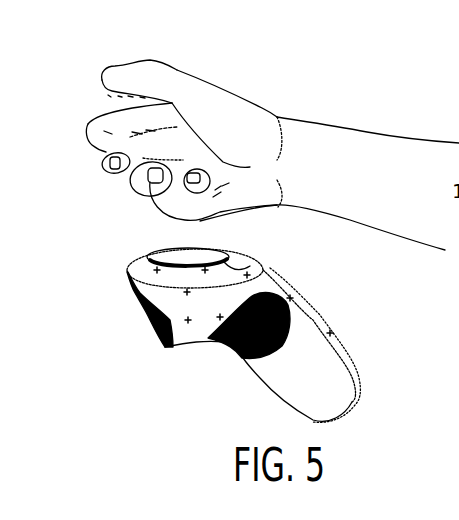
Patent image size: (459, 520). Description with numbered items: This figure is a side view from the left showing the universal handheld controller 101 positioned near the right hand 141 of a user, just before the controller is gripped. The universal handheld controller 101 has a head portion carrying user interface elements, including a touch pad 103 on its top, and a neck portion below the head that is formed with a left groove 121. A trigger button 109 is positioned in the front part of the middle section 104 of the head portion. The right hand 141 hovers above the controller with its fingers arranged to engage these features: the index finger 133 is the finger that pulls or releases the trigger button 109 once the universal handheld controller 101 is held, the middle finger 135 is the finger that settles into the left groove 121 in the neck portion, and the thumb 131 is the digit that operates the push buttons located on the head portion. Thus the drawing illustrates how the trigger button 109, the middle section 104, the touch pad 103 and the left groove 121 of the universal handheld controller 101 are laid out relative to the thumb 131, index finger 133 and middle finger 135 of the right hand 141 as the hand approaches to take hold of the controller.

The universal handheld controller 101 is at (234, 324).
The touch pad 103 is at (157, 252).
The middle section 104 is at (180, 310).
The trigger button 109 is at (150, 323).
The left groove 121 is at (287, 312).
The thumb 131 is at (128, 67).
The index finger 133 is at (87, 128).
The middle finger 135 is at (105, 168).
The right hand 141 is at (220, 87).